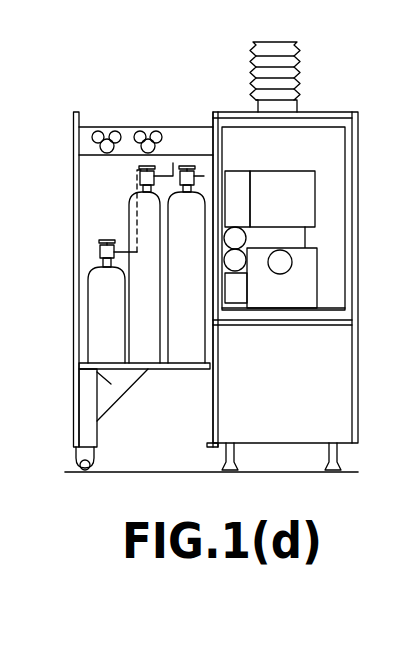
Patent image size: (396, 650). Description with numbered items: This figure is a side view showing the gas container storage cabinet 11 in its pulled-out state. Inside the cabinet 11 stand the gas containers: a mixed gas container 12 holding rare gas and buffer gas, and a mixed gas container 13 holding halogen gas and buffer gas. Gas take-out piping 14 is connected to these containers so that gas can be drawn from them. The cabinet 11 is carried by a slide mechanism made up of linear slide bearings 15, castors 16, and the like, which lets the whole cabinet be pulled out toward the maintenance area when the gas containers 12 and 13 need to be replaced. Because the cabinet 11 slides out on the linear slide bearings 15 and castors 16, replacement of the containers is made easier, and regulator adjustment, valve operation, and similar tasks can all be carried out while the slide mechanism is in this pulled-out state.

The gas container storage cabinet 11 is at (92, 193).
The mixed gas (rare gas and buffer gas) container 12 is at (180, 348).
The mixed gas (halogen gas and buffer gas) container 13 is at (95, 321).
The gas take-out piping 14 is at (140, 136).
The linear slide bearing 15 is at (197, 370).
The castor 16 is at (91, 464).